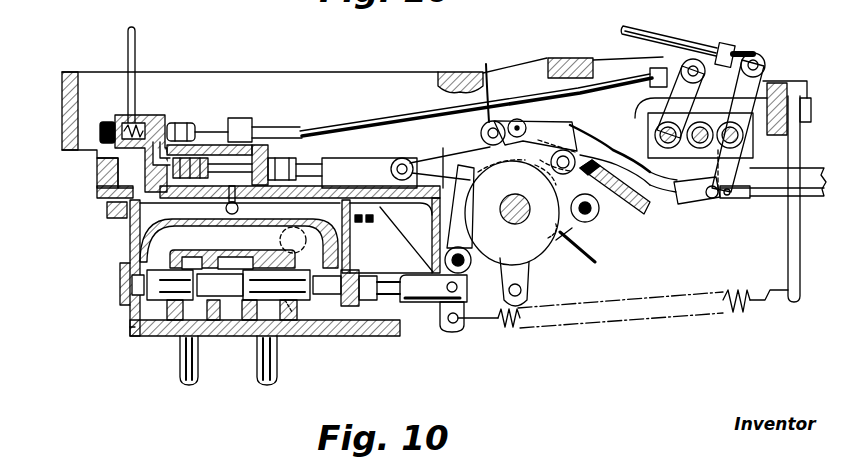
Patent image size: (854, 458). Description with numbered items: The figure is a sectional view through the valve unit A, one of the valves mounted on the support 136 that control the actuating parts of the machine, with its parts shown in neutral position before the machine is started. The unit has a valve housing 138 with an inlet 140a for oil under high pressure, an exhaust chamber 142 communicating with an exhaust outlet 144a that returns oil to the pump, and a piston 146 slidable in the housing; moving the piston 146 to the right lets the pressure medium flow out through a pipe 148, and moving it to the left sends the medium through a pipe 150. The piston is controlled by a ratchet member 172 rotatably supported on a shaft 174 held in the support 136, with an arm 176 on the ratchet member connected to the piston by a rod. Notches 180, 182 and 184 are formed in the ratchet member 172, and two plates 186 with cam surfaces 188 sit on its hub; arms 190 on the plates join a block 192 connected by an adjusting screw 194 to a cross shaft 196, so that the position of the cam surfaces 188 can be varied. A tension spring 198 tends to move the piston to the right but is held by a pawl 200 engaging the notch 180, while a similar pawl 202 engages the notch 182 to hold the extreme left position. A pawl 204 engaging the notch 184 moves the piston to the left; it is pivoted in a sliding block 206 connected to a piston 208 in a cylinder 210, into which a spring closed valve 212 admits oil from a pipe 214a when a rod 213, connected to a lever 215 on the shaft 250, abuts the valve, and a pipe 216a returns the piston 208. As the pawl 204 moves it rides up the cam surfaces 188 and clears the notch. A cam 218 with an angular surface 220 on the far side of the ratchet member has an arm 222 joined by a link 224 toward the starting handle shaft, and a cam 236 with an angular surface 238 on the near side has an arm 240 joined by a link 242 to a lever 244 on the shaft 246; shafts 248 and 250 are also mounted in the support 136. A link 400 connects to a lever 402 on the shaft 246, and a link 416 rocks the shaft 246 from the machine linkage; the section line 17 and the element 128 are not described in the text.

The support 136 is at (277, 78).
The pipe 214a is at (128, 52).
The spring closed valve 212 is at (157, 115).
The piston 208 is at (200, 147).
The cylinder 210 is at (217, 147).
The rod 213 is at (298, 130).
The sliding block 206 is at (347, 167).
The pawl 200 is at (455, 237).
The angular surface 220 is at (460, 198).
The pipe 216a is at (225, 210).
The valve housing 138 is at (150, 235).
The exhaust chamber 142 is at (145, 256).
The exhaust outlet 144a is at (293, 237).
The inlet 140a is at (228, 290).
The block 128 is at (388, 305).
The pipe 150 is at (180, 363).
The pipe 148 is at (277, 373).
The piston 146 is at (280, 307).
The valve unit A is at (128, 327).
The cam 218 is at (448, 168).
The pawl 204 is at (463, 160).
The arm 240 is at (486, 66).
The arm 222 is at (517, 117).
The arms 190 is at (567, 148).
The block 192 is at (572, 150).
The plates 186 is at (588, 152).
The link 242 is at (662, 185).
The lever 244 is at (730, 198).
The adjusting screw 194 is at (637, 205).
The cross shaft 196 is at (603, 212).
The shaft 174 is at (520, 222).
The notch 184 is at (504, 173).
The cam surfaces 188 is at (541, 180).
The notch 182 is at (548, 238).
The notch 180 is at (470, 215).
The cam 236 is at (540, 258).
The angular surface 238 is at (573, 233).
The pawl 202 is at (563, 247).
The arm 176 is at (525, 295).
The ratchet member 172 is at (487, 303).
The tension spring 198 is at (507, 327).
The link 400 is at (643, 29).
The shaft 250 is at (660, 125).
The lever 215 is at (684, 93).
The shaft 248 is at (707, 128).
The lever 402 is at (748, 83).
The shaft 246 is at (737, 138).
The link 224 is at (778, 182).
The link 416 is at (806, 195).
The section line 17 is at (487, 33).